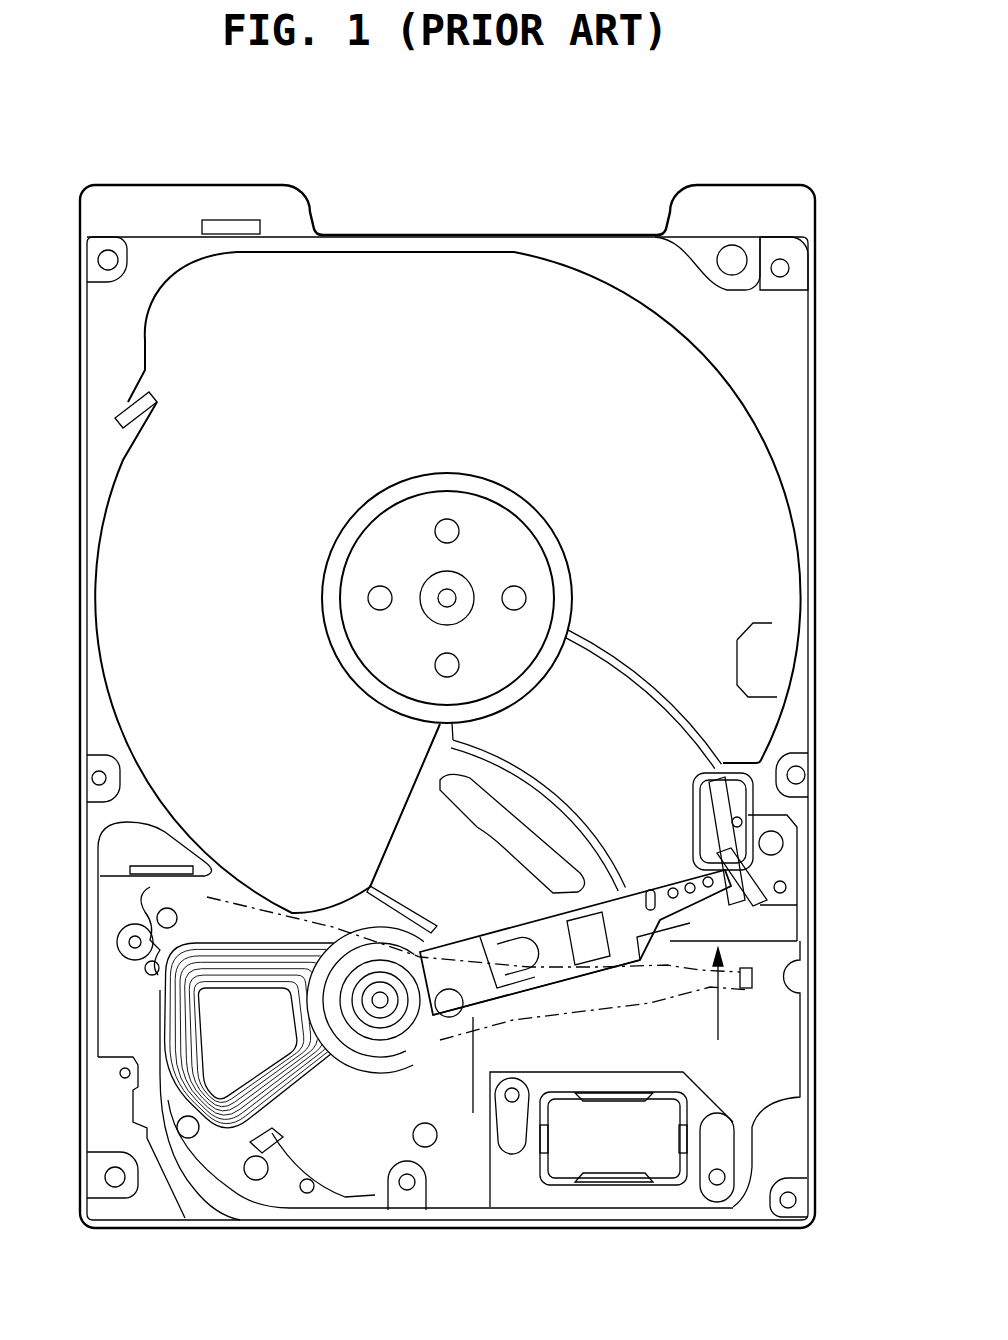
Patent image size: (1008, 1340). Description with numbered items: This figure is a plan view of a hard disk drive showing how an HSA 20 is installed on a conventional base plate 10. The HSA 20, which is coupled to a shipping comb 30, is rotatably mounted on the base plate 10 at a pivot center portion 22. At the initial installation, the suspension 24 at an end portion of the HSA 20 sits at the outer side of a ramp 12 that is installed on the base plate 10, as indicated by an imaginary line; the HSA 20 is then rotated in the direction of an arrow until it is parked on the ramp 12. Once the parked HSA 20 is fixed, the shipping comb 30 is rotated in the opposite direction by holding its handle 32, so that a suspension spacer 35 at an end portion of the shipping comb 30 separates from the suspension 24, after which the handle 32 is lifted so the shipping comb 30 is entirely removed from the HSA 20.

The base plate 10 is at (815, 478).
The ramp 12 is at (784, 843).
The HSA 20 is at (550, 918).
The pivot center portion 22 is at (378, 1010).
The suspension 24 is at (712, 877).
The shipping comb 30 is at (538, 992).
The handle 32 is at (449, 1017).
The suspension spacer 35 is at (677, 860).